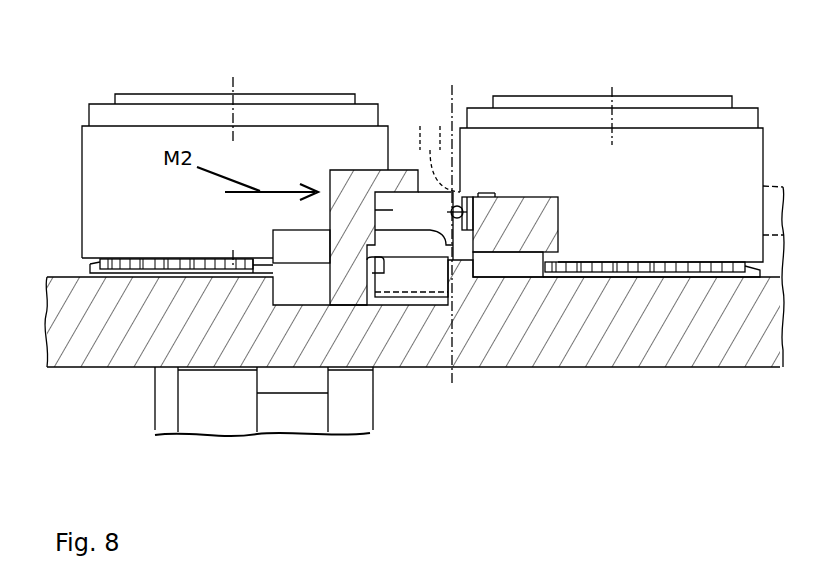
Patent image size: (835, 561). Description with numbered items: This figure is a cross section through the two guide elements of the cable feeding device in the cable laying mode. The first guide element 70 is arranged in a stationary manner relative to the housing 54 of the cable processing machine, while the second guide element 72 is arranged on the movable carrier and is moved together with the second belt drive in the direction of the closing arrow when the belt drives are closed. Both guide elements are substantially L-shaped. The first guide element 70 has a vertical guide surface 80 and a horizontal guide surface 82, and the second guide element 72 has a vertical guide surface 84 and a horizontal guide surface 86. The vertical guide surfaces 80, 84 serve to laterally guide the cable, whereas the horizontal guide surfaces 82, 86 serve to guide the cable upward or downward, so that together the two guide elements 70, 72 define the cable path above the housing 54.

The housing 54 is at (683, 358).
The first guide element 70 is at (516, 212).
The second guide element 72 is at (355, 196).
The vertical guide surface 80 is at (461, 193).
The horizontal guide surface 82 is at (459, 224).
The vertical guide surface 84 is at (382, 228).
The horizontal guide surface 86 is at (408, 203).